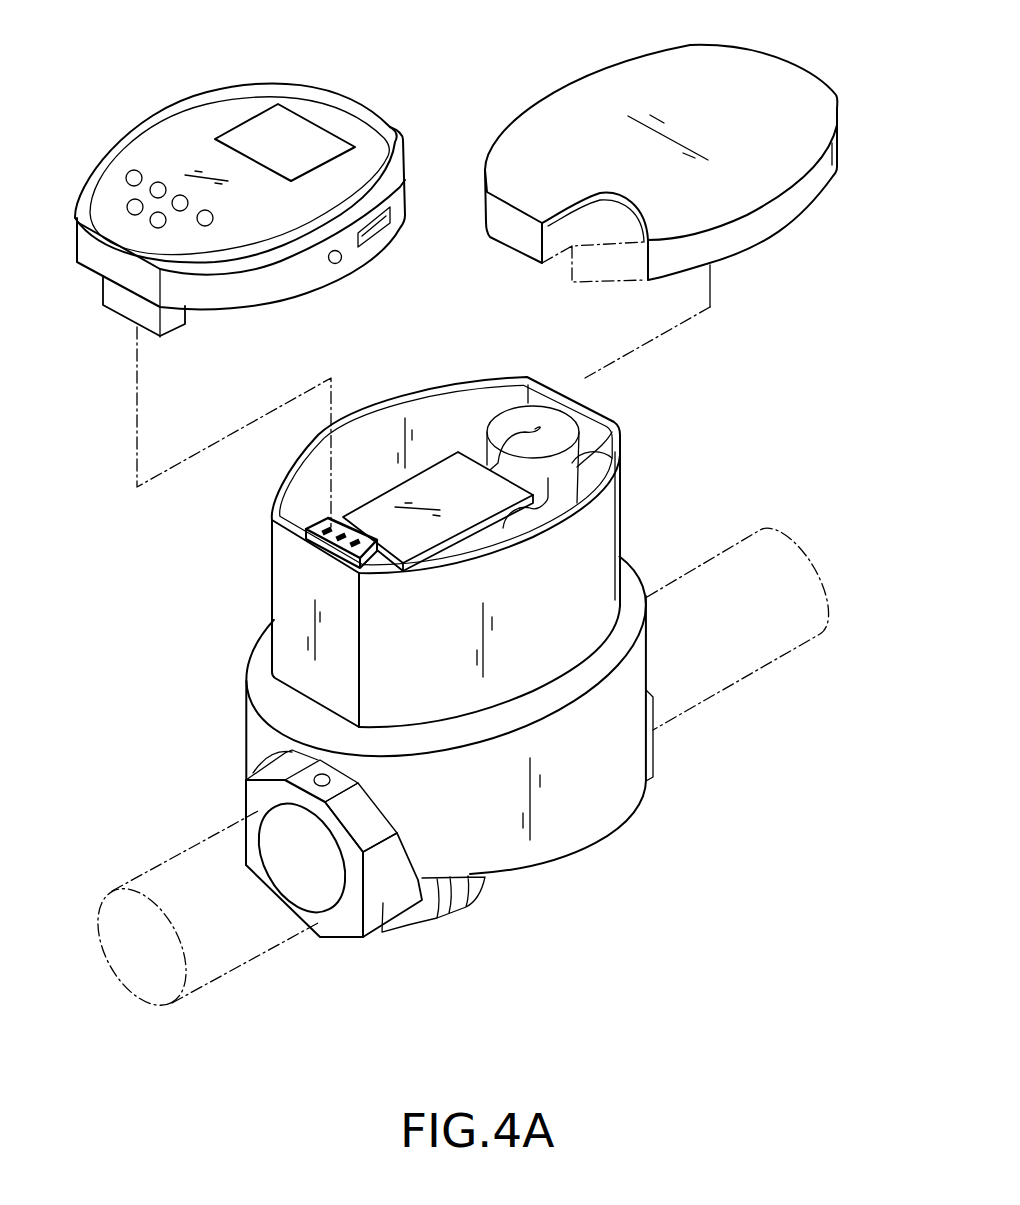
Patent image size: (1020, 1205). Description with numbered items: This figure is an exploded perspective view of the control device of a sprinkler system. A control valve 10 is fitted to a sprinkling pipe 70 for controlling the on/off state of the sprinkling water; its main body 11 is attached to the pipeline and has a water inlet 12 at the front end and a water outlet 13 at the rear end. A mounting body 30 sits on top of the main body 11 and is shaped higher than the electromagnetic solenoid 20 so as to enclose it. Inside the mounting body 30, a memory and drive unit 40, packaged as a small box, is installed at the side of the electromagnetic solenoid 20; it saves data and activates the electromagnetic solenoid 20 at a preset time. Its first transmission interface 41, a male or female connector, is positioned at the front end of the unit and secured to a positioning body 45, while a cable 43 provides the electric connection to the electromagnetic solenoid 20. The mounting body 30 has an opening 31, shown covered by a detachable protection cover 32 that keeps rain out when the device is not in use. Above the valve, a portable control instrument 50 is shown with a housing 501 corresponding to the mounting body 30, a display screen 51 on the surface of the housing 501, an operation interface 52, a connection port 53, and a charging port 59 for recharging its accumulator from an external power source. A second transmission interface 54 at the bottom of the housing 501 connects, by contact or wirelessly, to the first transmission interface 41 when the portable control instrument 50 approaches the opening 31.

The control valve 10 is at (541, 925).
The main body 11 is at (595, 807).
The water inlet 12 is at (383, 903).
The water outlet 13 is at (652, 753).
The electromagnetic solenoid 20 is at (597, 442).
The mounting body 30 is at (593, 552).
The opening 31 is at (437, 427).
The protection cover 32 is at (760, 77).
The memory and drive unit 40 is at (380, 513).
The first transmission interface 41 is at (303, 526).
The cable 43 is at (503, 413).
The positioning body 45 is at (600, 498).
The portable control instrument 50 is at (120, 98).
The housing 501 is at (222, 284).
The display screen 51 is at (260, 118).
The operation interface 52 is at (155, 190).
The connection port 53 is at (375, 231).
The second transmission interface 54 is at (118, 314).
The charging port 59 is at (340, 258).
The sprinkling pipe 70 is at (168, 872).